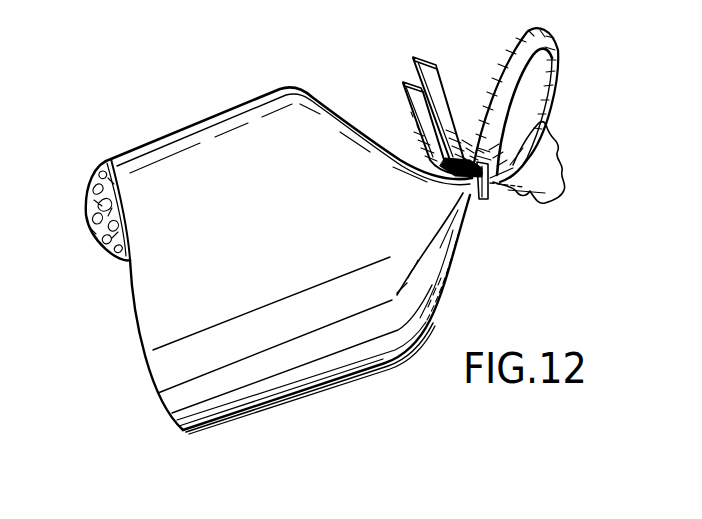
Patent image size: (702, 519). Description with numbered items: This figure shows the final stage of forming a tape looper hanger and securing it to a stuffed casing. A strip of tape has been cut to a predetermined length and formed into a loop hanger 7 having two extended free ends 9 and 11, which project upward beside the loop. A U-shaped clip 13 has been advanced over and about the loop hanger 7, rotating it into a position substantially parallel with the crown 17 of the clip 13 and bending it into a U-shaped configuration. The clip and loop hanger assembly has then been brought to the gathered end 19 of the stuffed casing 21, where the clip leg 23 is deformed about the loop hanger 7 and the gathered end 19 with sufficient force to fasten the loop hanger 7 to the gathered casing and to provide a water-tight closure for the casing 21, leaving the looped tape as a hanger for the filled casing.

The loop hanger 7 is at (555, 66).
The free end 9 is at (426, 66).
The free end 11 is at (406, 92).
The clip 13 is at (527, 165).
The crown 17 is at (468, 152).
The gathered end 19 is at (458, 192).
The stuffed casing 21 is at (190, 134).
The clip leg 23 is at (483, 199).